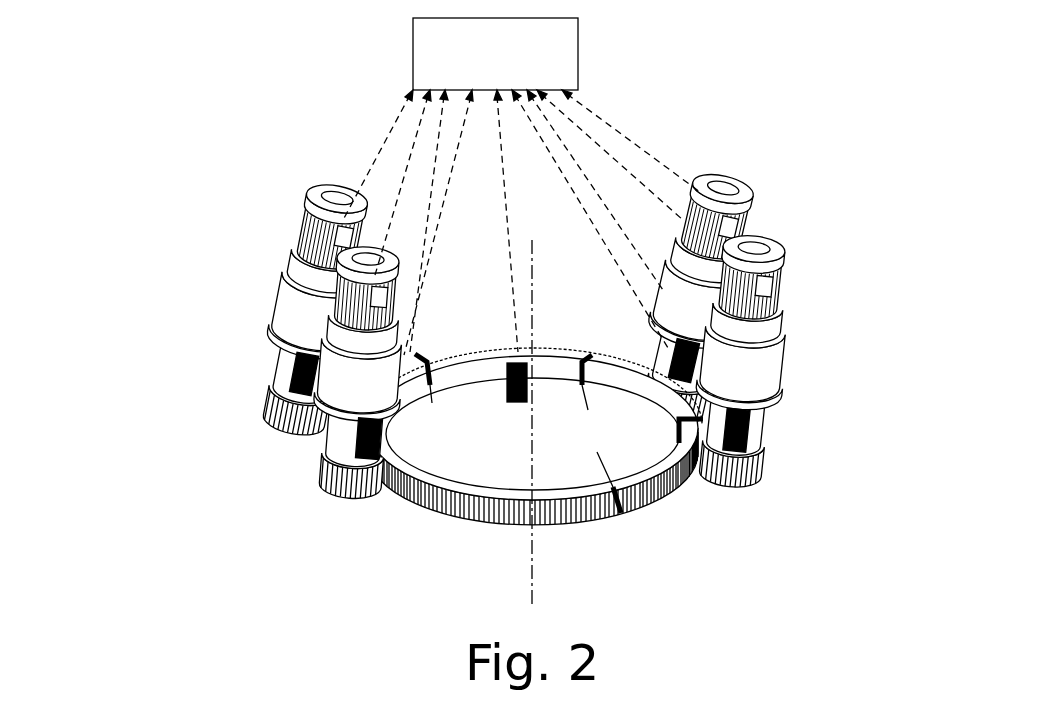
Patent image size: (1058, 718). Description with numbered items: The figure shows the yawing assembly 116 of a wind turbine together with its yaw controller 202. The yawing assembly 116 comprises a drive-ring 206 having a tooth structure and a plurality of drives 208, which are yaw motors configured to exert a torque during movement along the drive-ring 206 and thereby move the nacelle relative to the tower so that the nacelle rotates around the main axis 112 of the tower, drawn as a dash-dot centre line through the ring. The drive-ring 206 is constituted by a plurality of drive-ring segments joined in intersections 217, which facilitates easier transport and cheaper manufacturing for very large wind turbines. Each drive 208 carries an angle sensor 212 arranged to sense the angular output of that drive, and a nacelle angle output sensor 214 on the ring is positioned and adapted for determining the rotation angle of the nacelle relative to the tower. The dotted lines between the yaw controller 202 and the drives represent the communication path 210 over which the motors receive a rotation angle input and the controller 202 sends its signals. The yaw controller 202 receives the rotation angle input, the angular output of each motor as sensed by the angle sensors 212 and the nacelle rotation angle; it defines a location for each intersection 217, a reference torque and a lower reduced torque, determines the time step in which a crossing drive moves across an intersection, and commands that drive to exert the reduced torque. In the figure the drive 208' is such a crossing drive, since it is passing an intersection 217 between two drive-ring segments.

The yawing assembly 116 is at (142, 267).
The yaw controller 202 is at (413, 57).
The communication path 210 is at (380, 147).
The drive 208 is at (574, 329).
The crossing drive 208' is at (272, 373).
The angle sensor 212 is at (357, 460).
The intersection 217 is at (387, 452).
The nacelle angle output sensor 214 is at (510, 402).
The main axis 112 is at (517, 567).
The drive-ring 206 is at (595, 518).